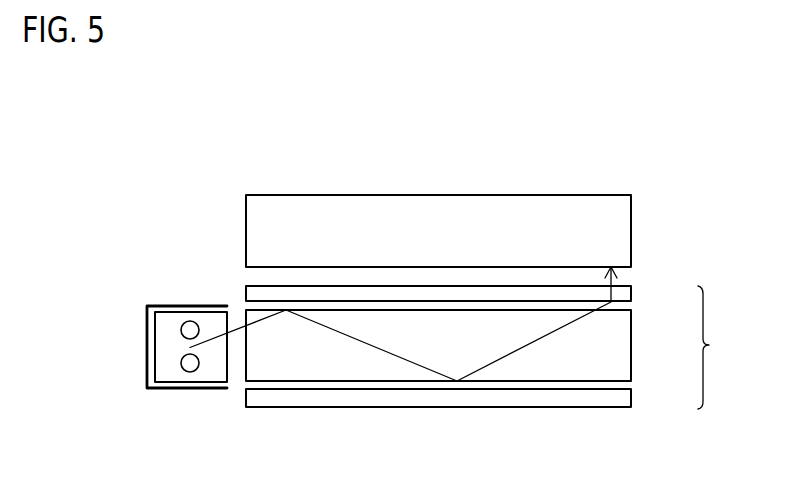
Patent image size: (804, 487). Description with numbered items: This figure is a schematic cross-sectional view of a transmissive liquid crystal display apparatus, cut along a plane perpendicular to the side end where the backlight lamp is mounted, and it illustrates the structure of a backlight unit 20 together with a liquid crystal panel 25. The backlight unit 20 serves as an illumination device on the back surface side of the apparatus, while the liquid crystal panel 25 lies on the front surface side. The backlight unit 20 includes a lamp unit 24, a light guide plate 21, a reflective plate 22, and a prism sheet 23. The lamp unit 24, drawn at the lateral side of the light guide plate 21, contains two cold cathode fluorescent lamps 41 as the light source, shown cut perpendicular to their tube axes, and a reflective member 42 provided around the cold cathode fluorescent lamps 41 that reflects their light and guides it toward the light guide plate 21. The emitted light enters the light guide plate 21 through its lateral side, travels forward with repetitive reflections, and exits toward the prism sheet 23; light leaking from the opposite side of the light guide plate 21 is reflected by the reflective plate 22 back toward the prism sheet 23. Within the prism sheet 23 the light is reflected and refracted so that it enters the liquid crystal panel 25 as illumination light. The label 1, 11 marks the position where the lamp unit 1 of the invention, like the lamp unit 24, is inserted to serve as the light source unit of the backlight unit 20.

The lamp unit 1 is at (191, 312).
The light emitting element 11 is at (189, 307).
The backlight unit 20 is at (719, 347).
The light guide plate 21 is at (625, 345).
The reflective plate 22 is at (625, 398).
The prism sheet 23 is at (625, 295).
The lamp unit 24 is at (121, 277).
The liquid crystal panel 25 is at (625, 227).
The cold cathode fluorescent lamps 41 is at (183, 337).
The reflective member 42 is at (147, 347).